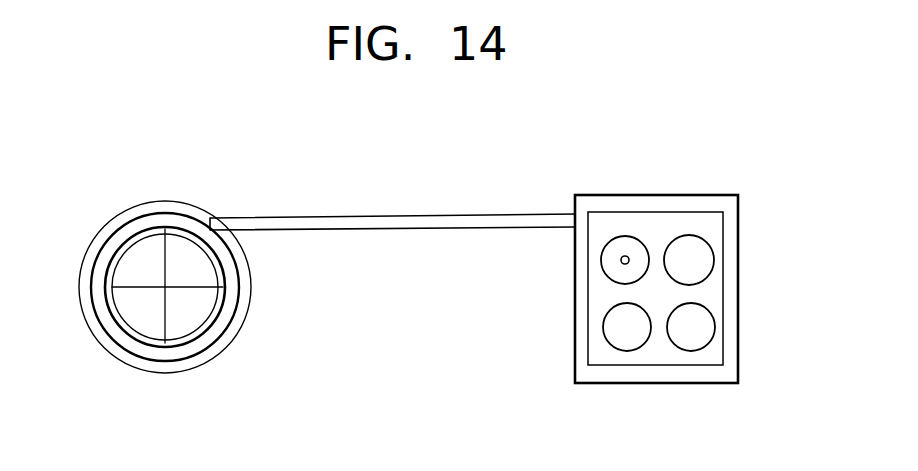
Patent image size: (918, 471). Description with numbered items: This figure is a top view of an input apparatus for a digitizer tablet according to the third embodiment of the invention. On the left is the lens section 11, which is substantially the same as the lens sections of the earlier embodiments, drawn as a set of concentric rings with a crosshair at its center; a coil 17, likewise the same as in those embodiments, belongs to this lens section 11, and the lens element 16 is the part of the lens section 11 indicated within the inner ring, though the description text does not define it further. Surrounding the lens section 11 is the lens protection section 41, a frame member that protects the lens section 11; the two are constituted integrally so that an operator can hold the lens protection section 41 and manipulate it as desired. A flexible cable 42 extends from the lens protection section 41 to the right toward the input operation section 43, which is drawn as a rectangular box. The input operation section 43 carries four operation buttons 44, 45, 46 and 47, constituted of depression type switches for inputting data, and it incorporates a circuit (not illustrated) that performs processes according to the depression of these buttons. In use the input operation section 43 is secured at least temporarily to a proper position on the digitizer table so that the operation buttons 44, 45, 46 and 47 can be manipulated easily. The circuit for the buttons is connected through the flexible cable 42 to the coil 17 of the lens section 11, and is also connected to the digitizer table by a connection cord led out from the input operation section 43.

The lens section 11 is at (190, 308).
The lens 16 is at (195, 287).
The coil 17 is at (182, 345).
The lens protection section 41 is at (170, 212).
The flexible cable 42 is at (417, 213).
The input operation section 43 is at (695, 197).
The operation button 44 is at (610, 267).
The operation button 45 is at (613, 330).
The operation button 46 is at (698, 327).
The operation button 47 is at (700, 260).